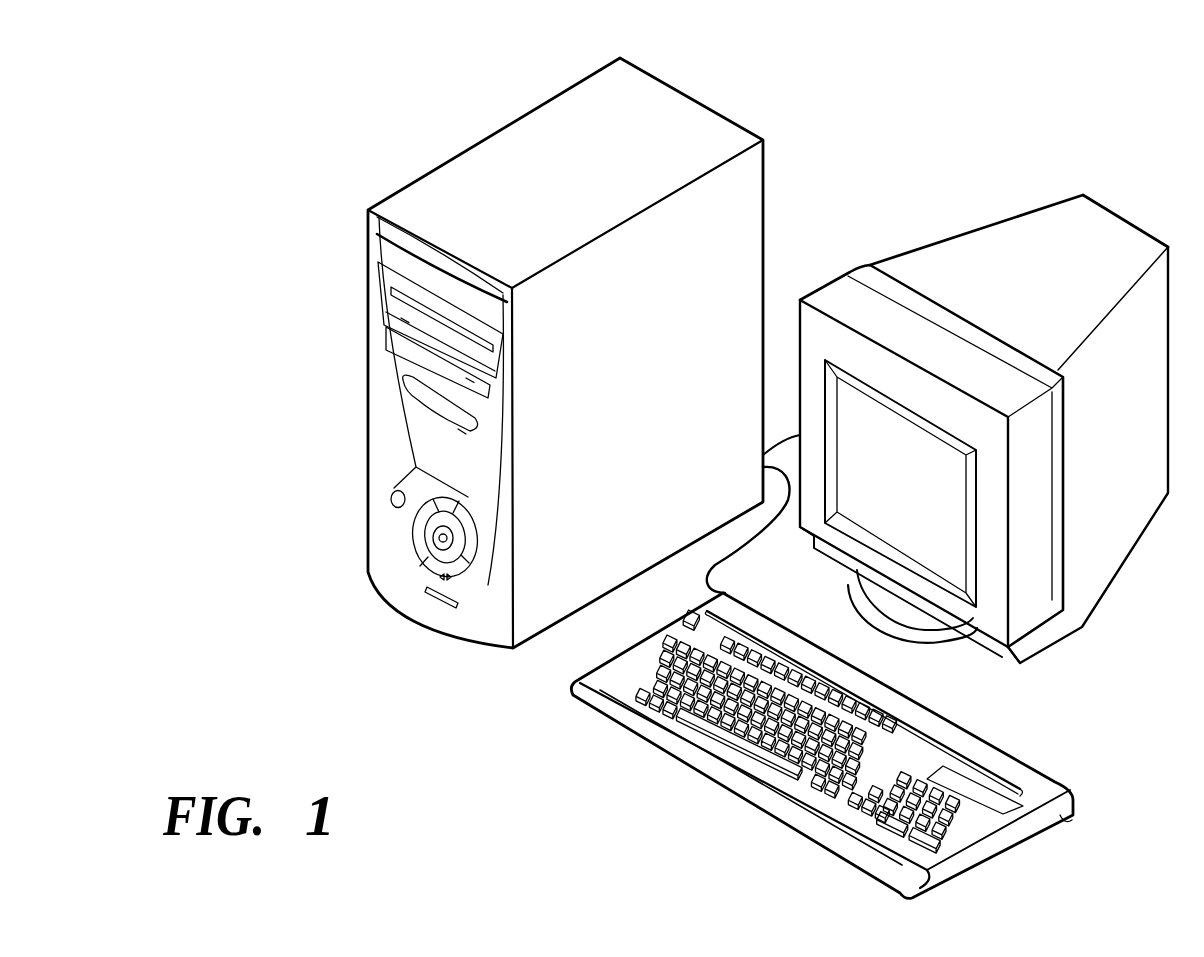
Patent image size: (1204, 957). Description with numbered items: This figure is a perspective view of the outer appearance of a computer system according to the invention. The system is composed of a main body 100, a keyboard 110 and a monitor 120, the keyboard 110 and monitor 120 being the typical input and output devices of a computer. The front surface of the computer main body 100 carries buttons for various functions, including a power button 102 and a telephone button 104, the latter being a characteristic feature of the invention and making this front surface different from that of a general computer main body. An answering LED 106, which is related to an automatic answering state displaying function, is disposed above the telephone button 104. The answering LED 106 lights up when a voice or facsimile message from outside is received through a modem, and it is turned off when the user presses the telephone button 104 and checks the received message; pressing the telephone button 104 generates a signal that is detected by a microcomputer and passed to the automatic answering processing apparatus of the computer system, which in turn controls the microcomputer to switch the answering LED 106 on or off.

The main body 100 is at (672, 88).
The power button 102 is at (390, 496).
The telephone button 104 is at (445, 540).
The answering LED 106 is at (453, 530).
The keyboard 110 is at (1075, 792).
The monitor 120 is at (1090, 213).